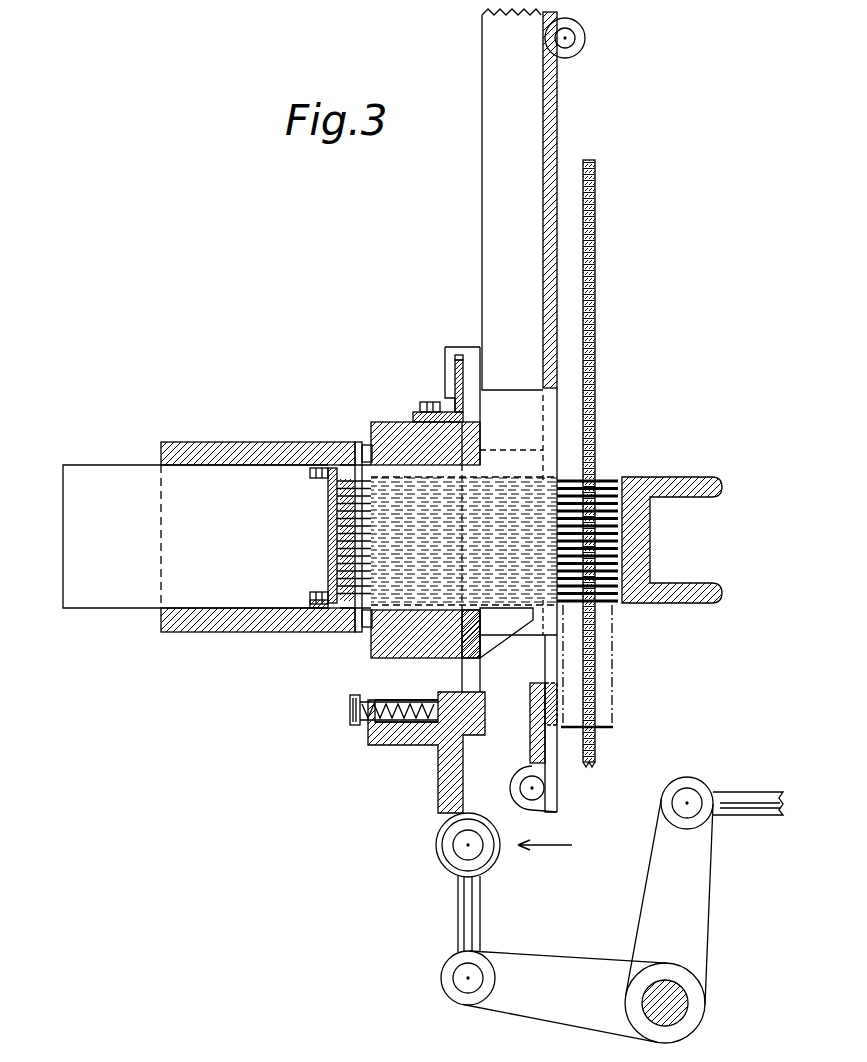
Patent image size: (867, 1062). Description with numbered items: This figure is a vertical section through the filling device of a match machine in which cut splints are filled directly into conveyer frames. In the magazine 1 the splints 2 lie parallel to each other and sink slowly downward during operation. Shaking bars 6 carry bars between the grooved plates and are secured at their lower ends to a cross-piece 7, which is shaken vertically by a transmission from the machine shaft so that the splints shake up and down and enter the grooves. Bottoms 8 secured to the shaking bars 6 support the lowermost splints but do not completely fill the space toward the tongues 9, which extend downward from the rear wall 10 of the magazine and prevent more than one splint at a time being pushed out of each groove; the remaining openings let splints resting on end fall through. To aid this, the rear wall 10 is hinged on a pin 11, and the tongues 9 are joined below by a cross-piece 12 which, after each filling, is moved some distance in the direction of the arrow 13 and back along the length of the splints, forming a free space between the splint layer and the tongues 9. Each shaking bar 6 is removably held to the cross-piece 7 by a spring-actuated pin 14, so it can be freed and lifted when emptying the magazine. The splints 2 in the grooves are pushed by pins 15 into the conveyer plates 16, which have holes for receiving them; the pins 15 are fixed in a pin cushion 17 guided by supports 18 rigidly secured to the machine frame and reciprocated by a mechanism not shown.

The magazine 1 is at (492, 185).
The splints 2 is at (578, 478).
The shaking bars 6 is at (452, 352).
The cross-piece 7 is at (440, 758).
The bottoms 8 is at (515, 612).
The tongues 9 is at (545, 663).
The rear wall 10 is at (555, 100).
The pin 11 is at (577, 38).
The cross-piece 12 is at (530, 745).
The arrow 13 is at (548, 845).
The spring-actuated pin 14 is at (362, 727).
The pins 15 is at (340, 632).
The conveyer plates 16 is at (596, 228).
The pin cushion 17 is at (232, 445).
The supports 18 is at (107, 478).